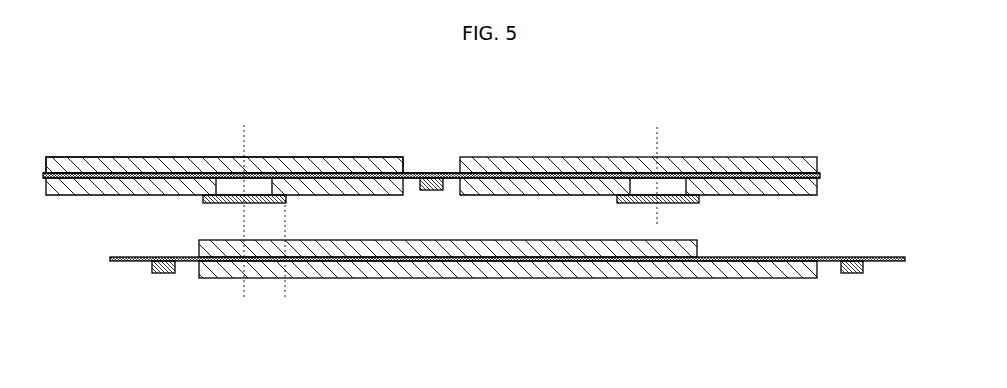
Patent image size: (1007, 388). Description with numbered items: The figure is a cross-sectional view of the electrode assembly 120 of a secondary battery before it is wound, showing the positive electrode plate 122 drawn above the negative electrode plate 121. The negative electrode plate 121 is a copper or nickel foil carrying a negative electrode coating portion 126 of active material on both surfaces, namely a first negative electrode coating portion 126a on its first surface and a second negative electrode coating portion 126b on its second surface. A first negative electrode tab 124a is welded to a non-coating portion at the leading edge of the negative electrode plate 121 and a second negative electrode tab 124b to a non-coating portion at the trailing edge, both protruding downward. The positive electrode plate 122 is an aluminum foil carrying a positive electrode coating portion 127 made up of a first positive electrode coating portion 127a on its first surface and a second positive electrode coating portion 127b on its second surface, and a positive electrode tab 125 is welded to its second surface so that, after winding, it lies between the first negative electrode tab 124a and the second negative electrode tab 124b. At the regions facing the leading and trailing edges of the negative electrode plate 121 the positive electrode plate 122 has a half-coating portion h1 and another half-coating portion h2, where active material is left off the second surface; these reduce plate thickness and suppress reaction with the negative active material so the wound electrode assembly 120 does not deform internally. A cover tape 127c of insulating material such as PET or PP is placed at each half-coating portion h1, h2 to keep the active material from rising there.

The electrode assembly 120 is at (913, 133).
The negative electrode plate 121 is at (122, 262).
The positive electrode plate 122 is at (67, 157).
The first negative electrode tab 124a is at (163, 274).
The second negative electrode tab 124b is at (853, 274).
The positive electrode tab 125 is at (427, 178).
The negative electrode coating portion 126 is at (625, 335).
The first negative electrode coating portion 126a is at (605, 258).
The second negative electrode coating portion 126b is at (535, 278).
The positive electrode coating portion 127 is at (385, 101).
The first positive electrode coating portion 127a is at (293, 157).
The second positive electrode coating portion 127b is at (362, 157).
The cover tape 127c is at (203, 201).
The half-coating portion h1 is at (244, 186).
The half-coating portion h2 is at (657, 186).